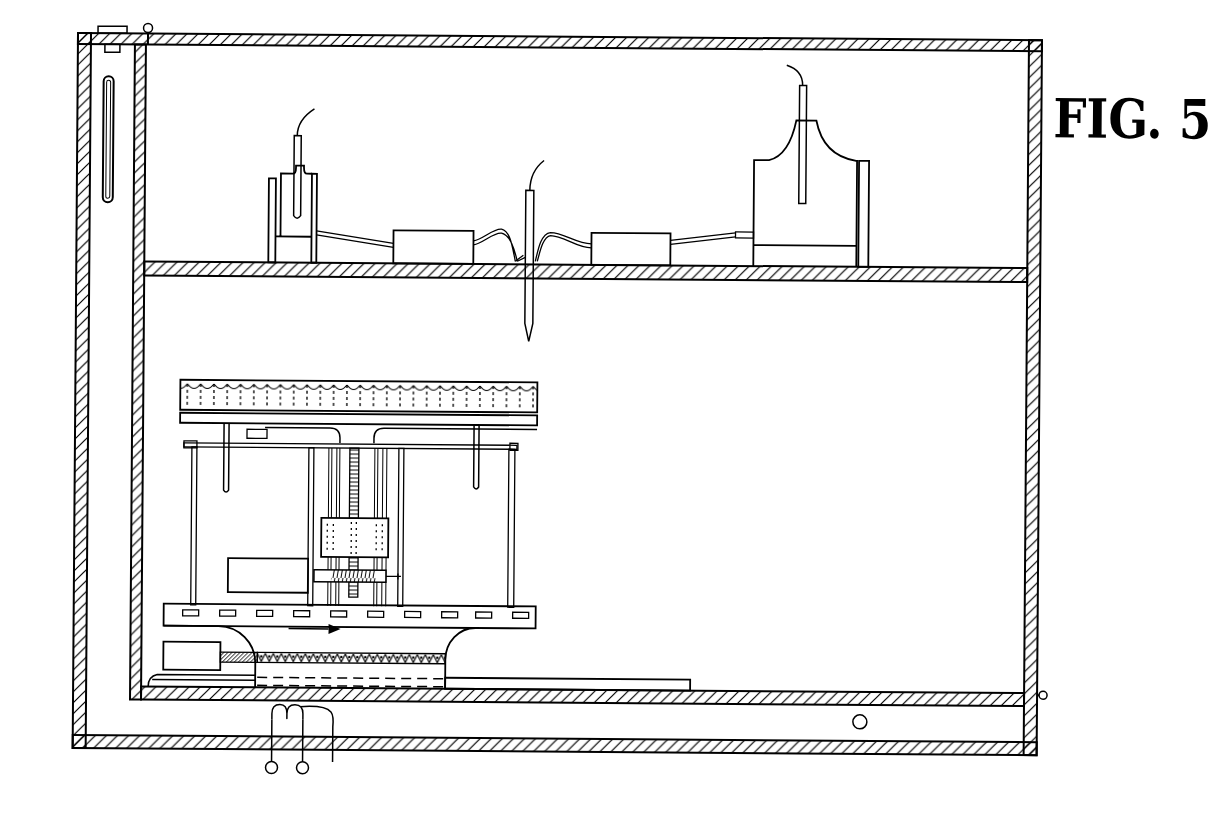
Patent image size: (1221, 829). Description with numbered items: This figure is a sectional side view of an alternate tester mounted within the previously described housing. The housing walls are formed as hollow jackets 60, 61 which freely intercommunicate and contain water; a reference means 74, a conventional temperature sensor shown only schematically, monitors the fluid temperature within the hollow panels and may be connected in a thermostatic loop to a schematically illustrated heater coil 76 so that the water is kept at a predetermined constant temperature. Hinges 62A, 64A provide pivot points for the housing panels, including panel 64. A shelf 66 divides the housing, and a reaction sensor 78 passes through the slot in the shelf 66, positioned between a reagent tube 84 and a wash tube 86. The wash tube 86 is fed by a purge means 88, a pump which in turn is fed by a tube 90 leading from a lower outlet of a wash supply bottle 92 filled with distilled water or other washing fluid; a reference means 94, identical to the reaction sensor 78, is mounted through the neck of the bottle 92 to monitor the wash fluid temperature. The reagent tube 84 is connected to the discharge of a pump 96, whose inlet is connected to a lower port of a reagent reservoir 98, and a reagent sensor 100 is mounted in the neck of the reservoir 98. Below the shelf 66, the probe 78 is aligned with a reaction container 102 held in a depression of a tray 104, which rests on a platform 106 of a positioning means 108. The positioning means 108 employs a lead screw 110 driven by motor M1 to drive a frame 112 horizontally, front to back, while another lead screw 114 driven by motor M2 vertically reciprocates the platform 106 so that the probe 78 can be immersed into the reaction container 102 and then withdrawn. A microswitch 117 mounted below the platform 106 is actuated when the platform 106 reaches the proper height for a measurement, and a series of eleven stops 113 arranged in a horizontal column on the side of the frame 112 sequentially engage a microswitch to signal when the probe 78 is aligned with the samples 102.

The hollow jacket 60 is at (78, 128).
The hollow jacket 61 is at (978, 686).
The hinge 62A is at (150, 45).
The panel 64 is at (1042, 322).
The hinge 64A is at (1052, 688).
The shelf 66 is at (985, 261).
The reference means 74 is at (872, 716).
The heater coil 76 is at (338, 760).
The reaction sensor 78 is at (535, 325).
The reagent tube 84 is at (525, 298).
The wash tube 86 is at (537, 298).
The purge means 88 is at (637, 229).
The tube 90 is at (712, 228).
The wash supply bottle 92 is at (835, 146).
The reference means 94 is at (808, 100).
The pump 96 is at (450, 228).
The reservoir 98 is at (318, 194).
The reagent sensor 100 is at (295, 148).
The reaction container 102 is at (540, 380).
The tray 104 is at (422, 379).
The platform 106 is at (540, 418).
The positioning means 108 is at (526, 487).
The lead screw 110 is at (440, 650).
The frame 112 is at (540, 615).
The stops 113 is at (488, 618).
The lead screw 114 is at (362, 500).
The limit switch 117 is at (250, 433).
The motor M1 is at (168, 648).
The motor M2 is at (272, 557).